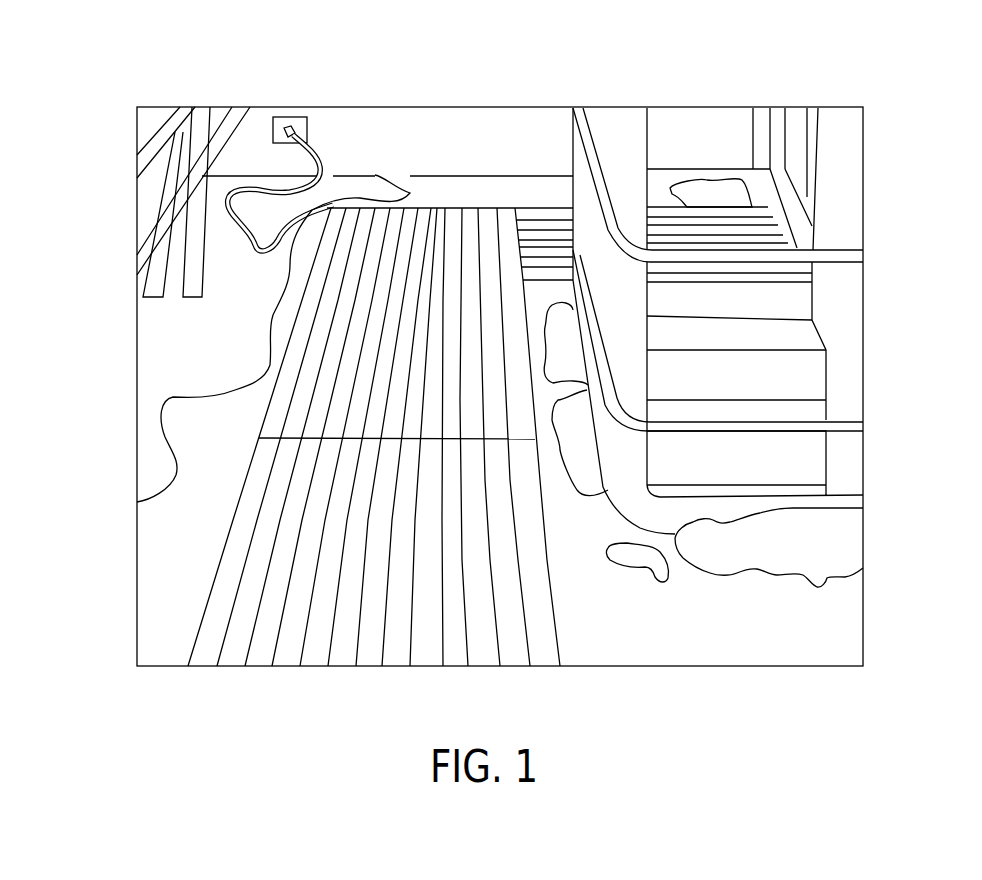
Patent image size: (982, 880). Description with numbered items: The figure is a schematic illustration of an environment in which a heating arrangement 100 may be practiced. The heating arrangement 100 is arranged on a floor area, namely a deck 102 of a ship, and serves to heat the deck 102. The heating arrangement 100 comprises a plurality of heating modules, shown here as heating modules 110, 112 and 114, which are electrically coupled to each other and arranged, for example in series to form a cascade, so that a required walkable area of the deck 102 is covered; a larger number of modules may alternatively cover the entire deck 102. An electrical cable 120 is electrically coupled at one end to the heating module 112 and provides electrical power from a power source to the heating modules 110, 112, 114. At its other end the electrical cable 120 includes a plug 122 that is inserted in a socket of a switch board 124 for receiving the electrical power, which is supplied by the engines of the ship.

The heating arrangement 100 is at (214, 536).
The deck 102 is at (822, 634).
The heating module 110 is at (247, 598).
The heating module 112 is at (302, 355).
The heating module 114 is at (545, 245).
The electrical cable 120 is at (320, 165).
The plug 122 is at (296, 130).
The switch board 124 is at (280, 117).